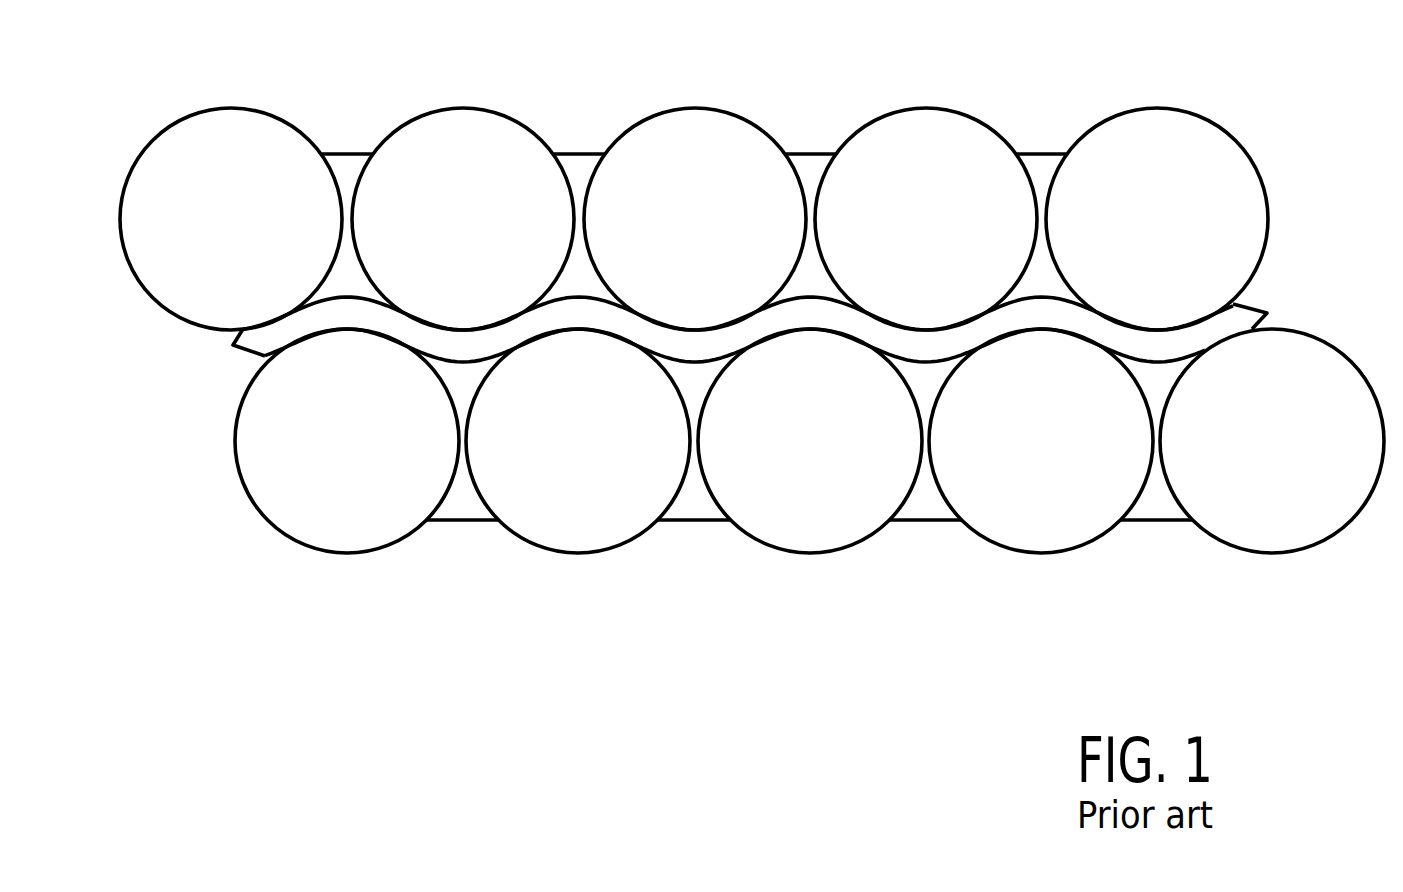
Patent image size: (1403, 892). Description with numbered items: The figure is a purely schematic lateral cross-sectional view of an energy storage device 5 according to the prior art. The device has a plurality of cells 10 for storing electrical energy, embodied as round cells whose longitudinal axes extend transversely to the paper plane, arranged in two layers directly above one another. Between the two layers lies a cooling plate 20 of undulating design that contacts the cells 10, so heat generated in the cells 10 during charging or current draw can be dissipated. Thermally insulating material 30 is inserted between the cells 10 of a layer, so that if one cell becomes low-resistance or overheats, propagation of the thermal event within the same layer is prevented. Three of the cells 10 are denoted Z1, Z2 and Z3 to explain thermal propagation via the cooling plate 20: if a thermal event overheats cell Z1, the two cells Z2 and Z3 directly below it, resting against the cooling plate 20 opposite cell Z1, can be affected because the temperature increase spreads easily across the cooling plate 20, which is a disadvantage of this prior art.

The energy storage device 5 is at (752, 340).
The cells 10 is at (752, 332).
The cooling plate 20 is at (1252, 320).
The thermally insulating material 30 is at (810, 163).
The cell Z1 is at (683, 128).
The cell Z2 is at (545, 517).
The cell Z3 is at (813, 517).